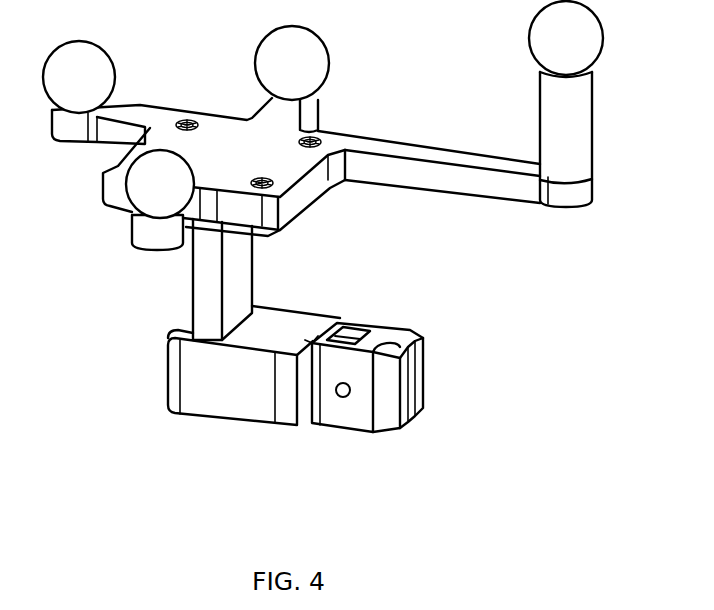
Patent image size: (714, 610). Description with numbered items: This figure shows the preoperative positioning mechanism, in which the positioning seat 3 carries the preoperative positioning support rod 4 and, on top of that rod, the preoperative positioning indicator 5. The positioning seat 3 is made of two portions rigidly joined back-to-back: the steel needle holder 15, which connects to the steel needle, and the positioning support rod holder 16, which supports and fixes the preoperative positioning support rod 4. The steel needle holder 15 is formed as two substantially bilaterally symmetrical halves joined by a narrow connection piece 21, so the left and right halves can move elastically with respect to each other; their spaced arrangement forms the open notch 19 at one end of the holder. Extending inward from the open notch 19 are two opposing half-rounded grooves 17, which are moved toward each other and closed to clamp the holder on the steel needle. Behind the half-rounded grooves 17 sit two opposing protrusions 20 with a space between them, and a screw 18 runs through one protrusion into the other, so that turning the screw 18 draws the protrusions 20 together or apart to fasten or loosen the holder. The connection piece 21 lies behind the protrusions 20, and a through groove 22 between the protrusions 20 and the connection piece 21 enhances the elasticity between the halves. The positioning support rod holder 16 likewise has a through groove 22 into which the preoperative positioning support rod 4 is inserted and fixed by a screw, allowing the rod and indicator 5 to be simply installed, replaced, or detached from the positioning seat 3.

The positioning seat 3 is at (230, 387).
The preoperative positioning support rod 4 is at (207, 292).
The preoperative positioning indicator 5 is at (258, 157).
The steel needle holder 15 is at (392, 440).
The positioning support rod holder 16 is at (300, 302).
The half-rounded grooves 17 is at (383, 365).
The screw 18 is at (341, 396).
The open notch 19 is at (203, 334).
The protrusions 20 is at (373, 330).
The connection piece 21 is at (337, 323).
The through groove 22 is at (325, 352).